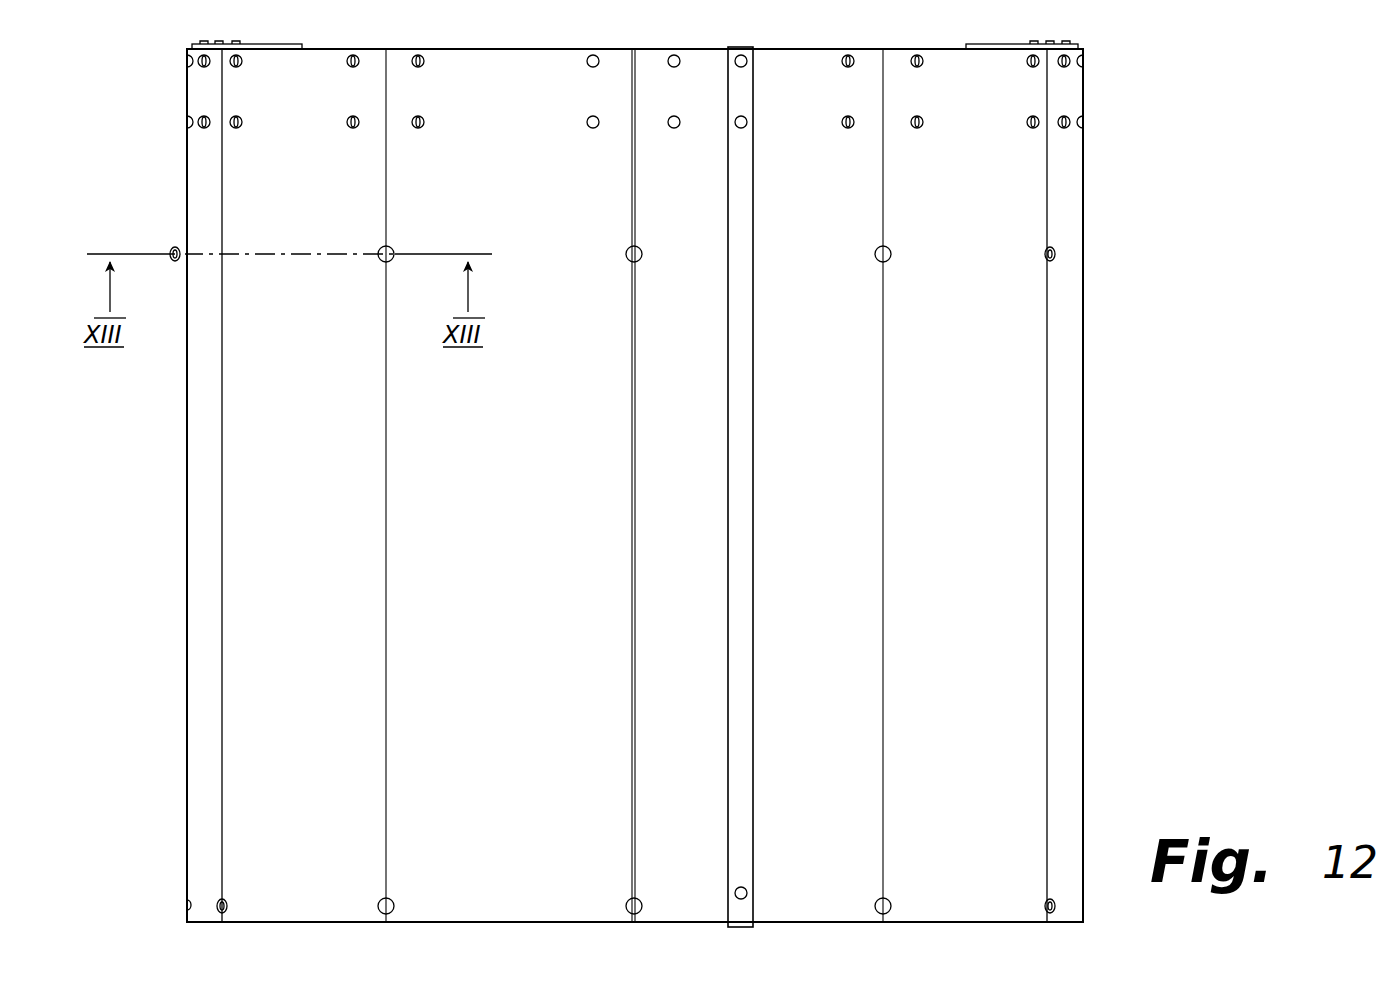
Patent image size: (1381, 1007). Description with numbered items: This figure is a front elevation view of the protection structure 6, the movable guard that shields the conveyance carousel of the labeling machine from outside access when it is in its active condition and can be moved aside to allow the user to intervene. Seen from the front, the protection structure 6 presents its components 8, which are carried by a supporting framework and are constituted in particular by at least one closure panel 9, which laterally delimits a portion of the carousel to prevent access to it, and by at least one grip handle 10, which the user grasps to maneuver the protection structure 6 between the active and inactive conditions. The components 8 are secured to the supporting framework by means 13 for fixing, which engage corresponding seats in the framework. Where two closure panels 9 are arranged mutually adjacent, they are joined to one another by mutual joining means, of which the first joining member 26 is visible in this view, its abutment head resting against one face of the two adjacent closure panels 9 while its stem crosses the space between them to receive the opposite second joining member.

The protection structure 6 is at (1090, 348).
The components 8 is at (300, 857).
The closure panel 9 is at (330, 602).
The grip handle 10 is at (737, 537).
The means for fixing 13 is at (427, 66).
The first joining member 26 is at (378, 261).